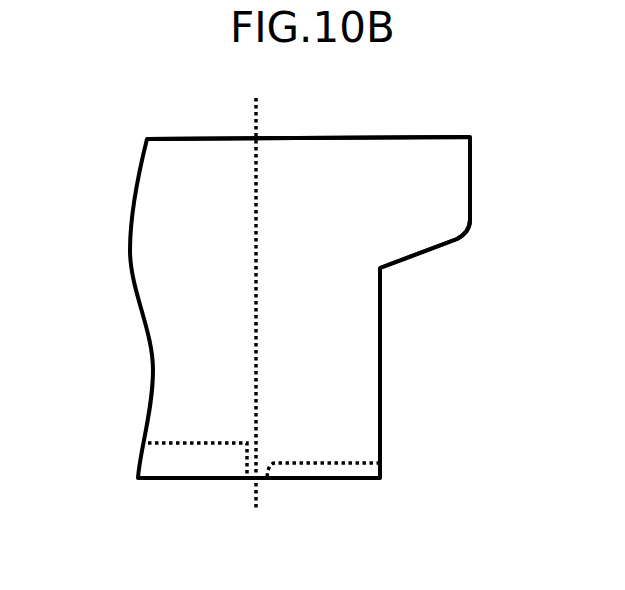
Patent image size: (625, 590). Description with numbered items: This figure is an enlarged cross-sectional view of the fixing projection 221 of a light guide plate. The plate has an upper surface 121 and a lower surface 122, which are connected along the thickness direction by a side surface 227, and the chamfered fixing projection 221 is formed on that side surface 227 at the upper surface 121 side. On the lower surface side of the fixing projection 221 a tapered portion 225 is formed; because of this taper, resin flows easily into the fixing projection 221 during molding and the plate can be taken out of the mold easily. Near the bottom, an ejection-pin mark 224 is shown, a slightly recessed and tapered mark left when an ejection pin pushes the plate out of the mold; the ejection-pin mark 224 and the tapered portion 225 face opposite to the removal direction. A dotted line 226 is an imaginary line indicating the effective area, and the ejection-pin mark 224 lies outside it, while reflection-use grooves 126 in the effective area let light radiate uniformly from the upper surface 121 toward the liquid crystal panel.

The upper surface 121 is at (197, 138).
The lower surface 122 is at (192, 478).
The reflection-use grooves 126 is at (148, 461).
The fixing projection 221 is at (423, 180).
The ejection-pin mark 224 is at (380, 475).
The tapered portion 225 is at (457, 239).
The dotted line 226 is at (258, 101).
The side surface 227 is at (380, 385).